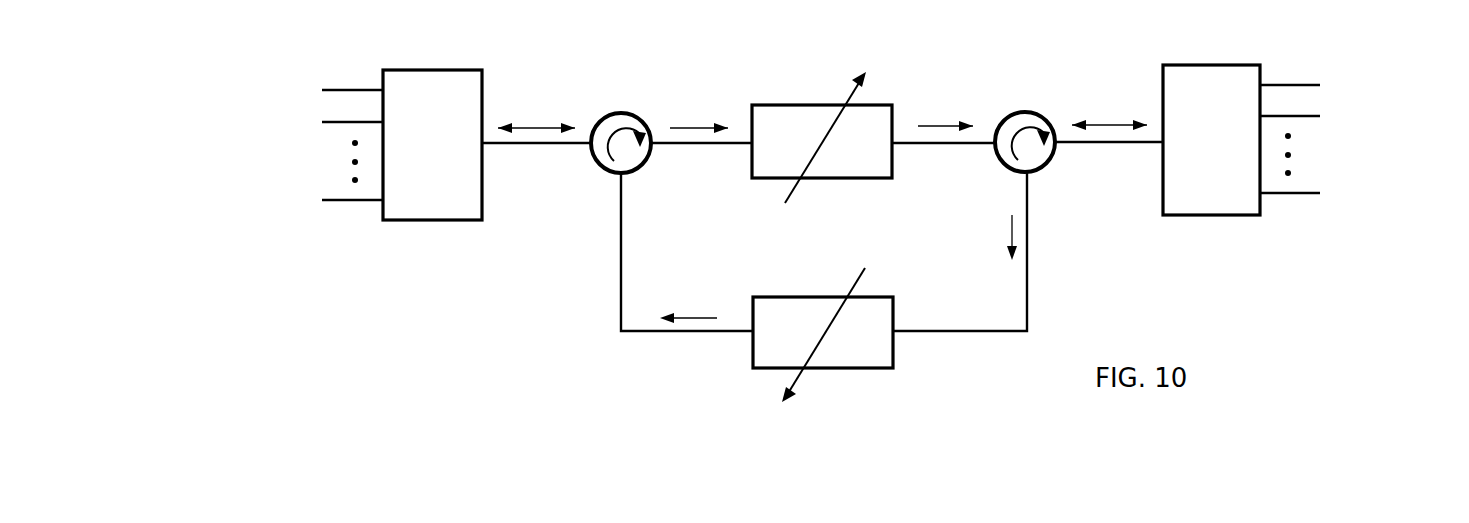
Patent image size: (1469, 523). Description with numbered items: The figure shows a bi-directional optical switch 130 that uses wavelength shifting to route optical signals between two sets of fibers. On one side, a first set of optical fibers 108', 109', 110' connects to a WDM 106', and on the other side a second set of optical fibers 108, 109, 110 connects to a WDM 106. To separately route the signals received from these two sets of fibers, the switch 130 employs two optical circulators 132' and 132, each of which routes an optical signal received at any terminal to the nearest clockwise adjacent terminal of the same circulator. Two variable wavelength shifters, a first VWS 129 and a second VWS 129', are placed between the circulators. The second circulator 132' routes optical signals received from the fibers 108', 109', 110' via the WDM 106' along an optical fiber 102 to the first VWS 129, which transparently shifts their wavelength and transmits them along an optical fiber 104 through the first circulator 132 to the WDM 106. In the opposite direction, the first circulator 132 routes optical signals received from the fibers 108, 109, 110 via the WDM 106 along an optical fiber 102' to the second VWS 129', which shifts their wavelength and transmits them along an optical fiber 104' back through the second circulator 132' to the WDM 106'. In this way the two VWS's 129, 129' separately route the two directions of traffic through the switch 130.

The bi-directional optical switch 130 is at (452, 318).
The WDM 106' is at (417, 119).
The WDM 106 is at (1227, 114).
The optical fiber 108' is at (332, 228).
The optical fiber 109' is at (305, 105).
The optical fiber 110' is at (325, 64).
The optical fiber 108 is at (1317, 58).
The optical fiber 109 is at (1336, 98).
The optical fiber 110 is at (1309, 222).
The second optical circulator 132' is at (626, 105).
The first optical circulator 132 is at (1026, 103).
The optical fiber 102 is at (701, 171).
The optical fiber 104 is at (943, 168).
The optical fiber 102' is at (960, 288).
The optical fiber 104' is at (687, 291).
The first VWS 129 is at (828, 154).
The second VWS 129' is at (833, 346).